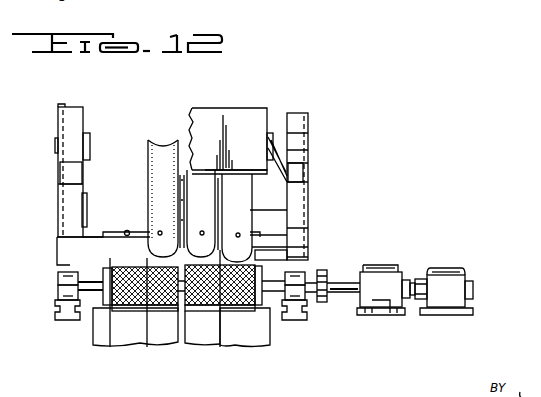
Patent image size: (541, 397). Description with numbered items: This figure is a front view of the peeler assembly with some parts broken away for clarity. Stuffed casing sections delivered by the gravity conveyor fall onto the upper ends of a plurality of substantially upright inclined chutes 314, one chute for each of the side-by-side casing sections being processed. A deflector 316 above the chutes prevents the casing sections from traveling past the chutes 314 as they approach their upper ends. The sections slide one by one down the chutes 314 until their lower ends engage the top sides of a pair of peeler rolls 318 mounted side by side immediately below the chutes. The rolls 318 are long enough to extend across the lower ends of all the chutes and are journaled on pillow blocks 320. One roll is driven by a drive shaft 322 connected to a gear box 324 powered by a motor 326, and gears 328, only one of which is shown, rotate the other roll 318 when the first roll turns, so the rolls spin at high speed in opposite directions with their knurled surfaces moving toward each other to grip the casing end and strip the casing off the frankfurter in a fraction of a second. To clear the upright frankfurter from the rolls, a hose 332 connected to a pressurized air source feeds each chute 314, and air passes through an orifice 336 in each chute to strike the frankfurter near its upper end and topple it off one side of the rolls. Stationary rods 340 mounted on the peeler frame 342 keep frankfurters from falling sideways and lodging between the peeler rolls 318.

The inclined chutes 314 is at (173, 192).
The deflector 316 is at (233, 114).
The peeler rolls 318 is at (137, 266).
The pillow blocks 320 is at (62, 322).
The drive shaft 322 is at (342, 272).
The gear box 324 is at (385, 268).
The motor 326 is at (453, 272).
The gears 328 is at (323, 302).
The hose 332 is at (126, 231).
The orifice 336 is at (160, 232).
The stationary rods 340 is at (120, 334).
The peeler frame 342 is at (243, 333).